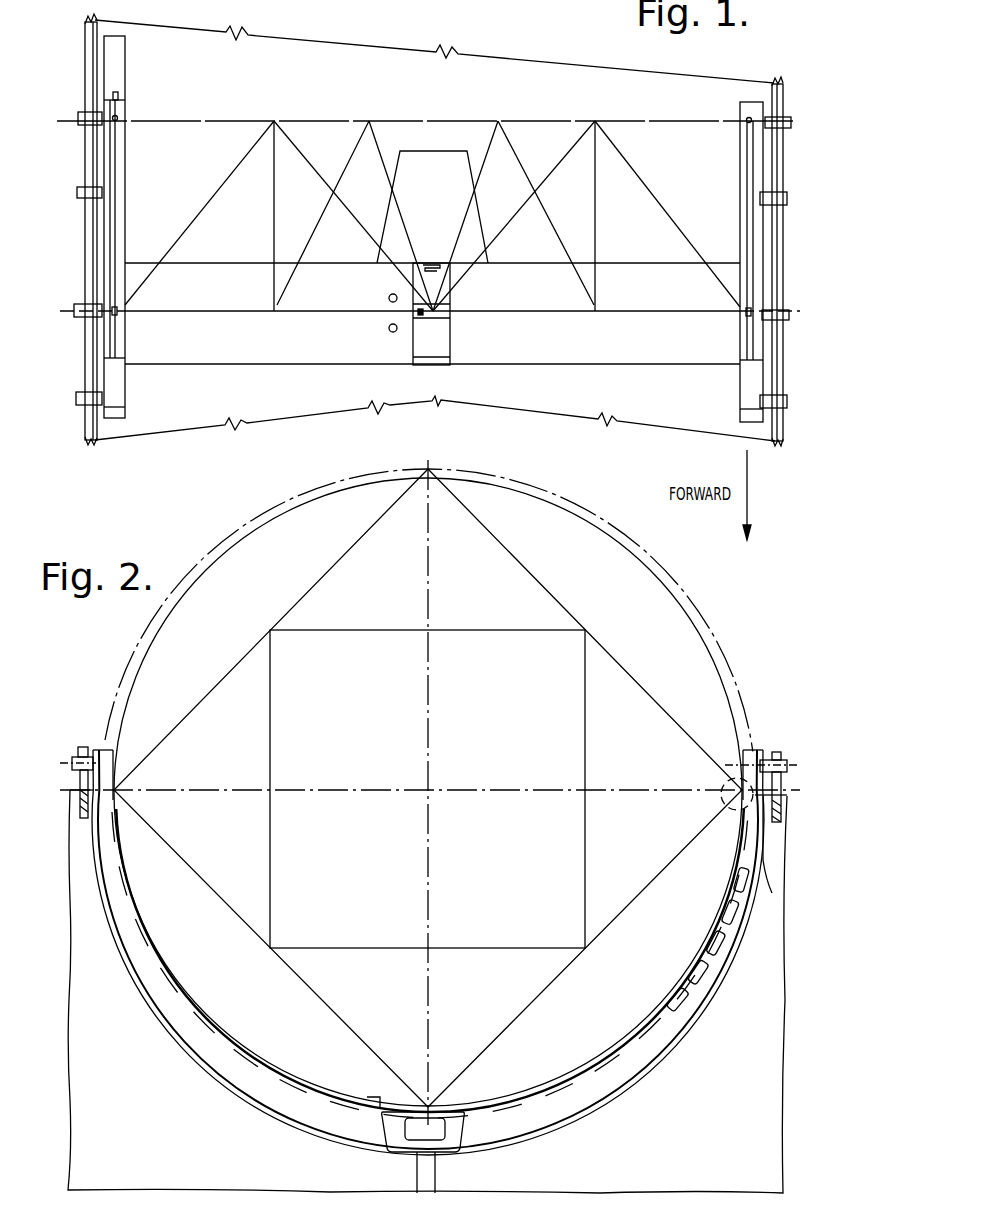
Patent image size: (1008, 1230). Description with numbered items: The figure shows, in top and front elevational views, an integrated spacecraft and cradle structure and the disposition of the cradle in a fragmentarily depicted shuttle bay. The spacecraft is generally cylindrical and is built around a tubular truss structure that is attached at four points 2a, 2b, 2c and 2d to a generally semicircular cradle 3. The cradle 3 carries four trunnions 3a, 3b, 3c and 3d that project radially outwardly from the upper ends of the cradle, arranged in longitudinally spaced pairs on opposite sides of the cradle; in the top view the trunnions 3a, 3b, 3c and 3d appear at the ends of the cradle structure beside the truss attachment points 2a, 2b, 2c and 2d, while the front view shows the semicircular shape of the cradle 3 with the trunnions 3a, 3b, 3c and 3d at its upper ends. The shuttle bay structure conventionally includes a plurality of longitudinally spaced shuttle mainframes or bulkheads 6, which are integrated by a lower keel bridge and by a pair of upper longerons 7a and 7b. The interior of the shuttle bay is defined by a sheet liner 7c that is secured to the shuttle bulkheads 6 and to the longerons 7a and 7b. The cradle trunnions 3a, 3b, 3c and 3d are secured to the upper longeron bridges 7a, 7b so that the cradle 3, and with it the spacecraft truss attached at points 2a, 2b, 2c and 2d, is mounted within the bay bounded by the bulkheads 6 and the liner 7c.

In FIG. 1, the attachment point 2a is at (117, 312).
In FIG. 1, the attachment point 2b is at (117, 120).
In FIG. 1, the attachment point 2c is at (748, 122).
In FIG. 1, the attachment point 2d is at (748, 313).
In FIG. 1, the cradle 3 is at (740, 202).
In FIG. 2, the cradle 3 is at (145, 968).
In FIG. 1, the trunnion 3a is at (84, 318).
In FIG. 2, the trunnion 3a is at (74, 765).
In FIG. 1, the trunnion 3b is at (86, 127).
In FIG. 1, the trunnion 3c is at (786, 129).
In FIG. 1, the trunnion 3d is at (784, 321).
In FIG. 1, the shuttle mainframe 6 is at (77, 394).
In FIG. 2, the shuttle mainframe 6 is at (86, 1037).
In FIG. 1, the upper longeron 7a is at (779, 434).
In FIG. 2, the upper longeron 7a is at (773, 870).
In FIG. 1, the upper longeron 7b is at (86, 433).
In FIG. 2, the upper longeron 7b is at (84, 812).
In FIG. 1, the sheet liner 7c is at (145, 425).
In FIG. 2, the sheet liner 7c is at (222, 1093).